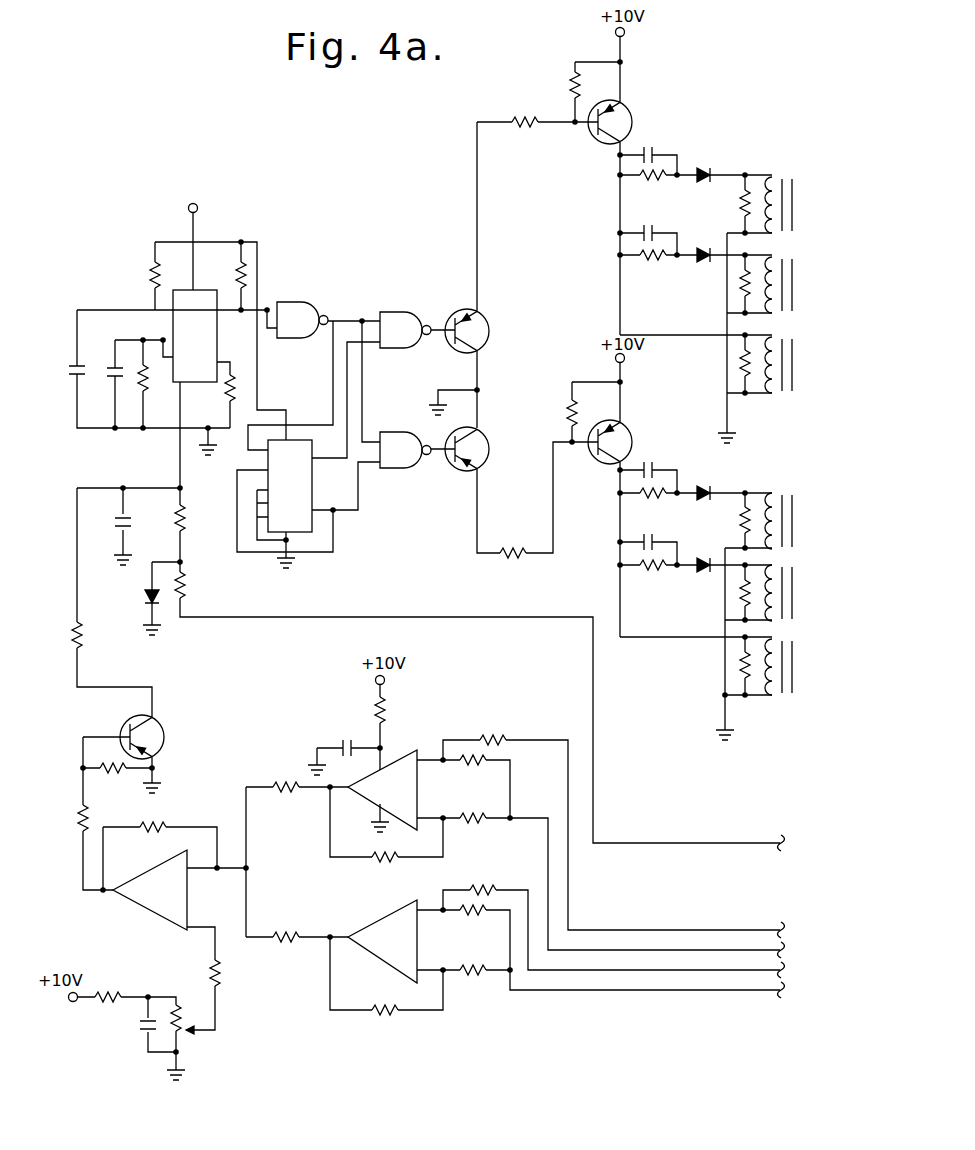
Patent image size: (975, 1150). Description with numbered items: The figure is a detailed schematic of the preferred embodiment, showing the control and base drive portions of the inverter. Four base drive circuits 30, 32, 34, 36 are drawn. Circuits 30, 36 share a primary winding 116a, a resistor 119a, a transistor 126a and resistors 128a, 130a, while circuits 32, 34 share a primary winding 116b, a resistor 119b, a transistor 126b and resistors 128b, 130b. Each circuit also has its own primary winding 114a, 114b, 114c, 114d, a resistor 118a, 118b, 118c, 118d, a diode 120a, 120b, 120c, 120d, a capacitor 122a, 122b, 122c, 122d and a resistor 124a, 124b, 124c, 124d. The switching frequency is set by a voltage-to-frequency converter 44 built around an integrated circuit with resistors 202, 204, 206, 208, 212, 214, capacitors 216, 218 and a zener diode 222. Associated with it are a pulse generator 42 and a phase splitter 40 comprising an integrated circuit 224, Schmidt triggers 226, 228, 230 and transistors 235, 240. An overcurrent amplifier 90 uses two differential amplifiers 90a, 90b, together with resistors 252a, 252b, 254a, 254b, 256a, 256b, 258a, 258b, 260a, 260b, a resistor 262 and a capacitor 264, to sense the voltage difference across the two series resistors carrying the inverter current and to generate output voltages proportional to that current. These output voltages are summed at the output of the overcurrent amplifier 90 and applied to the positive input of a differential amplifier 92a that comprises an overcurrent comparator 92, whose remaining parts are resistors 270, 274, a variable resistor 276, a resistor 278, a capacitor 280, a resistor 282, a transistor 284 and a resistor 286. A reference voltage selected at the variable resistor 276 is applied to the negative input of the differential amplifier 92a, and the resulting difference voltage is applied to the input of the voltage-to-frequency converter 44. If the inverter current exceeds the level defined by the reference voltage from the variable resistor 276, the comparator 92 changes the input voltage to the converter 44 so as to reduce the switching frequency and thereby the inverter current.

The base drive circuit 30 is at (580, 206).
The base drive circuit 32 is at (606, 518).
The base drive circuit 34 is at (604, 603).
The base drive circuit 36 is at (604, 280).
The phase splitter 40 is at (388, 494).
The pulse generator 42 is at (242, 570).
The voltage-to-frequency converter 44 is at (97, 250).
The overcurrent amplifier 90 is at (458, 684).
The differential amplifier 90a is at (382, 790).
The differential amplifier 90b is at (382, 941).
The overcurrent comparator 92 is at (226, 718).
The differential amplifier 92a is at (150, 890).
The primary winding 114a is at (763, 180).
The primary winding 114b is at (763, 496).
The primary winding 114c is at (760, 625).
The primary winding 114d is at (760, 318).
The primary winding 116a is at (765, 396).
The primary winding 116b is at (762, 704).
The resistor 118a is at (743, 201).
The resistor 118b is at (742, 518).
The resistor 118c is at (738, 607).
The resistor 118d is at (740, 298).
The resistor 119a is at (736, 360).
The resistor 119b is at (735, 672).
The diode 120a is at (712, 172).
The diode 120b is at (712, 487).
The diode 120c is at (712, 572).
The diode 120d is at (712, 260).
The capacitor 122a is at (657, 152).
The capacitor 122b is at (658, 468).
The capacitor 122c is at (660, 540).
The capacitor 122d is at (668, 228).
The resistor 124a is at (656, 180).
The resistor 124b is at (656, 498).
The resistor 124c is at (656, 568).
The resistor 124d is at (656, 260).
The transistor 126a is at (624, 112).
The transistor 126b is at (625, 450).
The resistor 128a is at (570, 82).
The resistor 128b is at (566, 414).
The resistor 130a is at (526, 120).
The resistor 130b is at (520, 548).
The resistor 202 is at (150, 280).
The resistor 204 is at (247, 280).
The resistor 206 is at (148, 386).
The resistor 208 is at (232, 374).
The resistor 212 is at (184, 584).
The resistor 214 is at (80, 640).
The capacitor 216 is at (78, 380).
The capacitor 218 is at (113, 364).
The zener diode 222 is at (146, 593).
The integrated circuit 224 is at (285, 504).
The Schmidt trigger 226 is at (314, 376).
The Schmidt trigger 228 is at (383, 385).
The Schmidt trigger 230 is at (383, 471).
The transistor 235 is at (488, 314).
The transistor 240 is at (488, 461).
The resistor 252a is at (504, 735).
The resistor 252b is at (488, 893).
The resistor 254a is at (482, 824).
The resistor 254b is at (486, 995).
The resistor 256a is at (282, 787).
The resistor 256b is at (294, 940).
The resistor 258a is at (372, 862).
The resistor 258b is at (378, 1016).
The resistor 260a is at (472, 770).
The resistor 260b is at (482, 920).
The resistor 262 is at (405, 727).
The capacitor 264 is at (344, 745).
The resistor 270 is at (78, 818).
The resistor 274 is at (222, 980).
The variable resistor 276 is at (180, 1006).
The resistor 278 is at (107, 992).
The capacitor 280 is at (143, 1030).
The resistor 282 is at (110, 772).
The transistor 284 is at (168, 742).
The resistor 286 is at (160, 822).